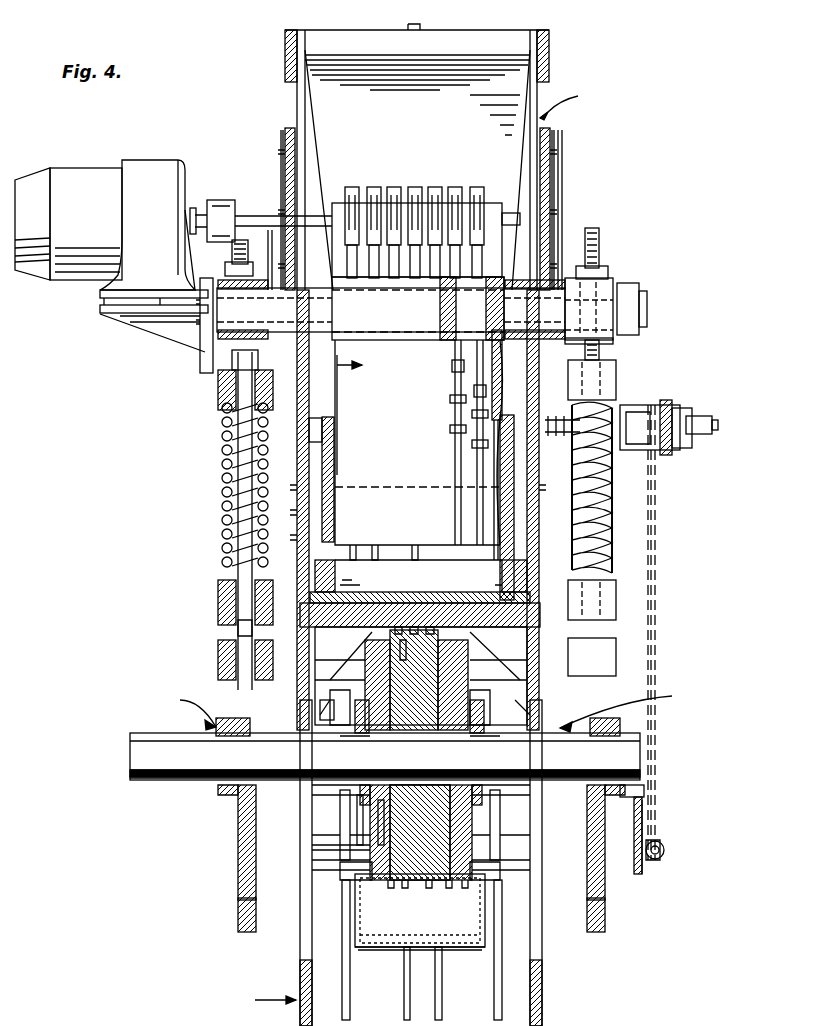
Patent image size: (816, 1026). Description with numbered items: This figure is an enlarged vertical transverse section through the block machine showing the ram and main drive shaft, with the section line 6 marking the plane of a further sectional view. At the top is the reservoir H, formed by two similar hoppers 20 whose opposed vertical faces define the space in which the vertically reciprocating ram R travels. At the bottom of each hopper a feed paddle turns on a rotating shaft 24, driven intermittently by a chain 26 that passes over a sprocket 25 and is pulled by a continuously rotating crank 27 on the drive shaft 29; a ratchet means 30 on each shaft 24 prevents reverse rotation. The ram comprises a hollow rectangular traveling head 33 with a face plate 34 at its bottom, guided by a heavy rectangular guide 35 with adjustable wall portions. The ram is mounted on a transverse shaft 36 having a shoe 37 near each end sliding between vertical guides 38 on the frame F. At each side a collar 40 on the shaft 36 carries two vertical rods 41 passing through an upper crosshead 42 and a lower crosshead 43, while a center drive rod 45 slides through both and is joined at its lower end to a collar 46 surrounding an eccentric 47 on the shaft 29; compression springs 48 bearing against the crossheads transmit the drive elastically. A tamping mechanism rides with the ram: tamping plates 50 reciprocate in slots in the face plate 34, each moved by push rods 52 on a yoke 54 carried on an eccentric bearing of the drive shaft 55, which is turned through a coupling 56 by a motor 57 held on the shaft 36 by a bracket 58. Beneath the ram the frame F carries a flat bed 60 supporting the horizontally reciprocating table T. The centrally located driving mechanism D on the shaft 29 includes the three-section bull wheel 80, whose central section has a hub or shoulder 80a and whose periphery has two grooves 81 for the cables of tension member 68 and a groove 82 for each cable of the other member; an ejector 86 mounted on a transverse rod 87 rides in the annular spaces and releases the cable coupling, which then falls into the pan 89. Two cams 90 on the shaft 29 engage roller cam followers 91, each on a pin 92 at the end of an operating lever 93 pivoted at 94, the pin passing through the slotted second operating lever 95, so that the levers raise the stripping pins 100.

The hopper 20 is at (417, 157).
The reservoir H is at (567, 99).
The vertically extending guides 38 is at (283, 146).
The shoe 37 is at (272, 262).
The yoke 54 is at (372, 190).
The push rods 52 is at (394, 280).
The drive shaft 55 is at (268, 214).
The coupling 56 is at (220, 199).
The motor 57 is at (105, 225).
The bracket 58 is at (140, 342).
The vertically extending rods 41 is at (226, 260).
The collar 40 is at (198, 352).
The transverse shaft 36 is at (648, 300).
The upper crosshead 42 is at (216, 394).
The center drive rod 45 is at (236, 442).
The compression spring 48 is at (228, 472).
The lower crosshead 43 is at (216, 592).
The table T is at (252, 606).
The collar 46 is at (216, 656).
The section line 6 is at (356, 409).
The rotating shaft 24 is at (318, 428).
The traveling head 33 is at (419, 450).
The rectangular guide 35 is at (322, 456).
The tamping plates 50 is at (478, 456).
The ratchet means 30 is at (628, 414).
The sprocket 25 is at (672, 420).
The chain 26 is at (656, 570).
The flat bed 60 is at (388, 608).
The ram R is at (425, 555).
The tension member 68 is at (428, 634).
The face plate 34 is at (497, 545).
The ejector 86 is at (400, 648).
The transversely extending rod 87 is at (320, 706).
The driving mechanism D is at (200, 714).
The frame F is at (462, 854).
The cam 90 is at (360, 733).
The drive shaft 29 is at (186, 770).
The bull wheel 80 is at (434, 800).
The second operating lever 95 is at (372, 800).
The pin 92 is at (382, 805).
The roller cam follower 91 is at (342, 808).
The pivot 94 is at (330, 838).
The operating lever 93 is at (340, 866).
The eccentric 47 is at (238, 856).
The crank 27 is at (644, 818).
The peripheral groove 82 is at (392, 886).
The hub or shoulder 80a is at (420, 910).
The peripheral grooves 81 is at (432, 888).
The pan 89 is at (392, 950).
The pins 100 is at (480, 990).